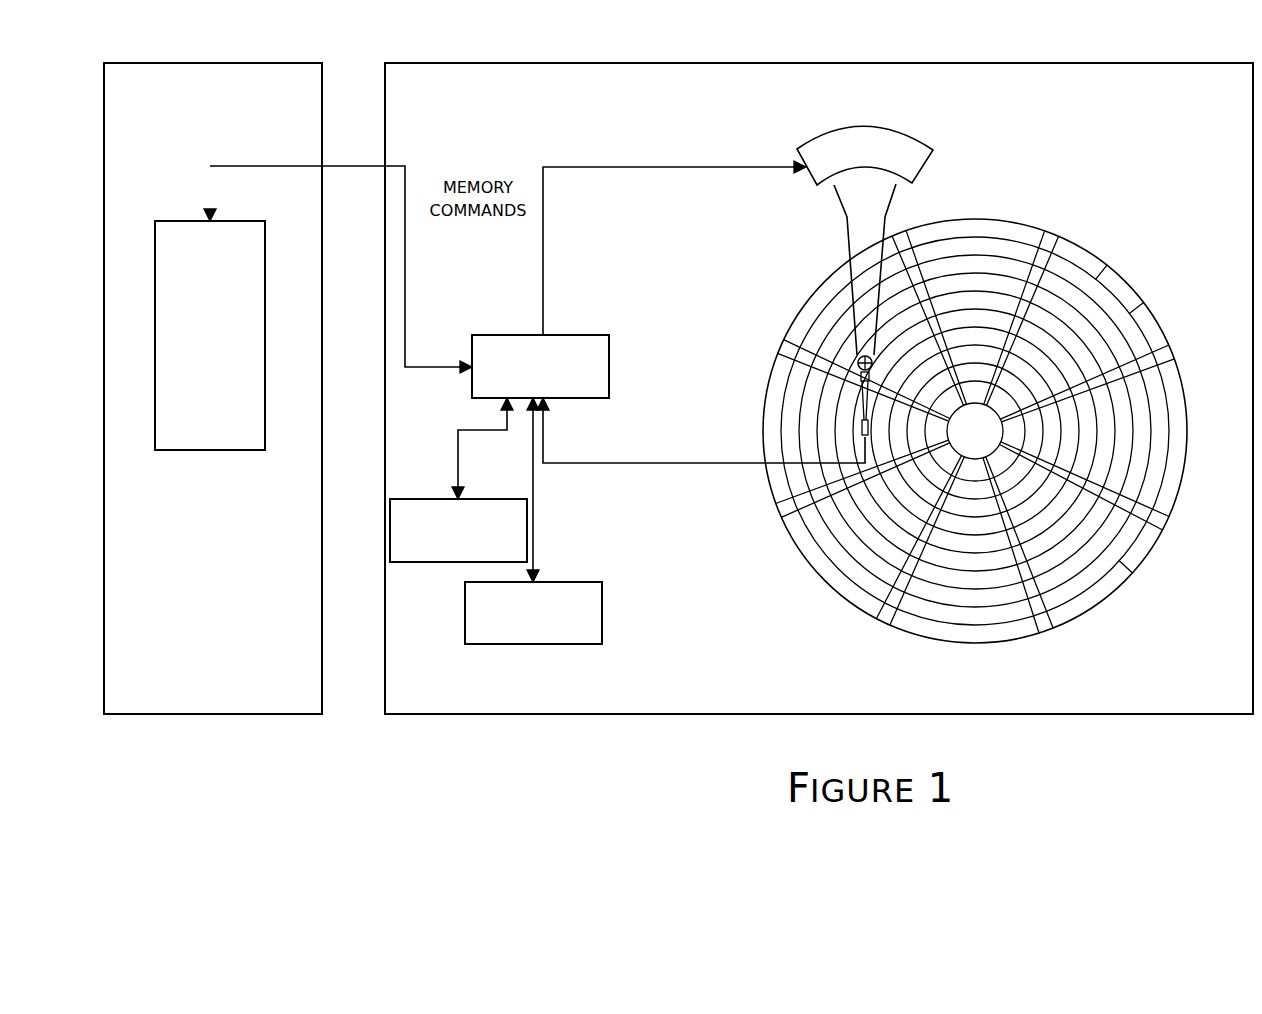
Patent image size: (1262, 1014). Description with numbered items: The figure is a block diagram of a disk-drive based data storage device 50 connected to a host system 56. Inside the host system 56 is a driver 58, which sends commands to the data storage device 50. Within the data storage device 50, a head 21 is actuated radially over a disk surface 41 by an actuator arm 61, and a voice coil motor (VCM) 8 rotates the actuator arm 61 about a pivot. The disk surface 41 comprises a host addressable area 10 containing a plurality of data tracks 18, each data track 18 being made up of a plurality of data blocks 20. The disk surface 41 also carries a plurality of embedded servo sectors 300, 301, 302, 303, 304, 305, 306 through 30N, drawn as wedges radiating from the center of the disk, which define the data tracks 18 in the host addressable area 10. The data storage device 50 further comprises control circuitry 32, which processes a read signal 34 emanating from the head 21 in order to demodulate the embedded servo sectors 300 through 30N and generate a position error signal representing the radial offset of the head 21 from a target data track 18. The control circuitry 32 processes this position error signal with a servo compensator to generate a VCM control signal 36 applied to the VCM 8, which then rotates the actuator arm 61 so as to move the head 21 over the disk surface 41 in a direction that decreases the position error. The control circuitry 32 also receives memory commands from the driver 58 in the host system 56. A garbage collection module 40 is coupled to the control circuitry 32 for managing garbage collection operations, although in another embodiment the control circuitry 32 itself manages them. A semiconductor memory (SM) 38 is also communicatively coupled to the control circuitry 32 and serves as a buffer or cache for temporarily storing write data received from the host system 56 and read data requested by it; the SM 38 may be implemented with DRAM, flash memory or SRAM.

The host system 56 is at (197, 63).
The driver 58 is at (204, 450).
The data storage device 50 is at (510, 63).
The control circuitry 32 is at (578, 335).
The VCM control signal 36 is at (543, 268).
The read signal 34 is at (668, 463).
The garbage collection module 40 is at (400, 562).
The semiconductor memory (SM) 38 is at (558, 644).
The voice coil motor (VCM) 8 is at (812, 180).
The actuator arm 61 is at (846, 235).
The head 21 is at (855, 438).
The disk surface 41 is at (1190, 428).
The data track 18 is at (979, 249).
The data blocks 20 is at (1145, 317).
The host addressable area 10 is at (1129, 566).
The embedded servo sector 300 is at (1053, 243).
The embedded servo sector 301 is at (1165, 357).
The embedded servo sector 302 is at (1162, 520).
The embedded servo sector 303 is at (1047, 624).
The embedded servo sector 304 is at (886, 618).
The embedded servo sector 305 is at (786, 508).
The embedded servo sector 306 is at (788, 348).
The embedded servo sector 30N is at (899, 246).